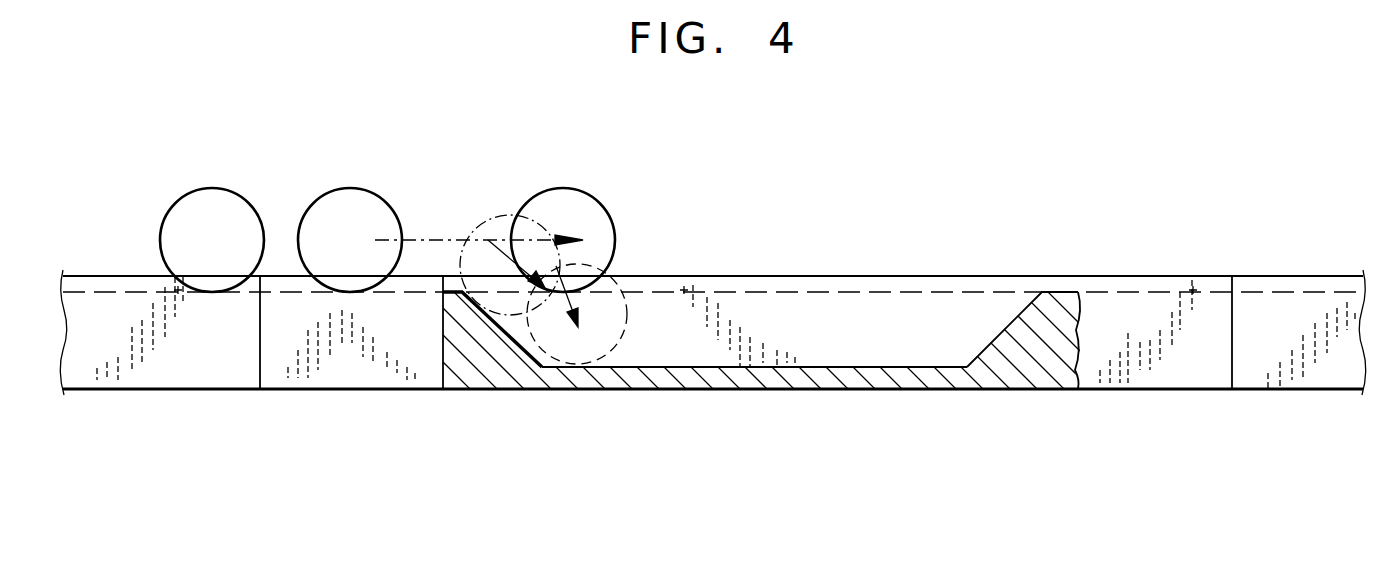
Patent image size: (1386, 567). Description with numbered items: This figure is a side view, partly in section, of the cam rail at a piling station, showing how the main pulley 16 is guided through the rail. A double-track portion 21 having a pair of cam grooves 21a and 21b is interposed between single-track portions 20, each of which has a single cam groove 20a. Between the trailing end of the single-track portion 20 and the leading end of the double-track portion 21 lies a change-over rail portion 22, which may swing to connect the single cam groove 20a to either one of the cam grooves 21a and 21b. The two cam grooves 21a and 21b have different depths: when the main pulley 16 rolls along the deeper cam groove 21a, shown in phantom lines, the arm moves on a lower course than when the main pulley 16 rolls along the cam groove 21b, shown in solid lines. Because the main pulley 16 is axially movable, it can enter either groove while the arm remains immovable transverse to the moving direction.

The main pulley 16 is at (209, 198).
The single-track portion 20 is at (165, 422).
The single cam groove 20a is at (1300, 228).
The double-track portion 21 is at (1139, 423).
The cam groove 21a is at (878, 372).
The cam groove 21b is at (843, 292).
The change-over rail portion 22 is at (360, 422).